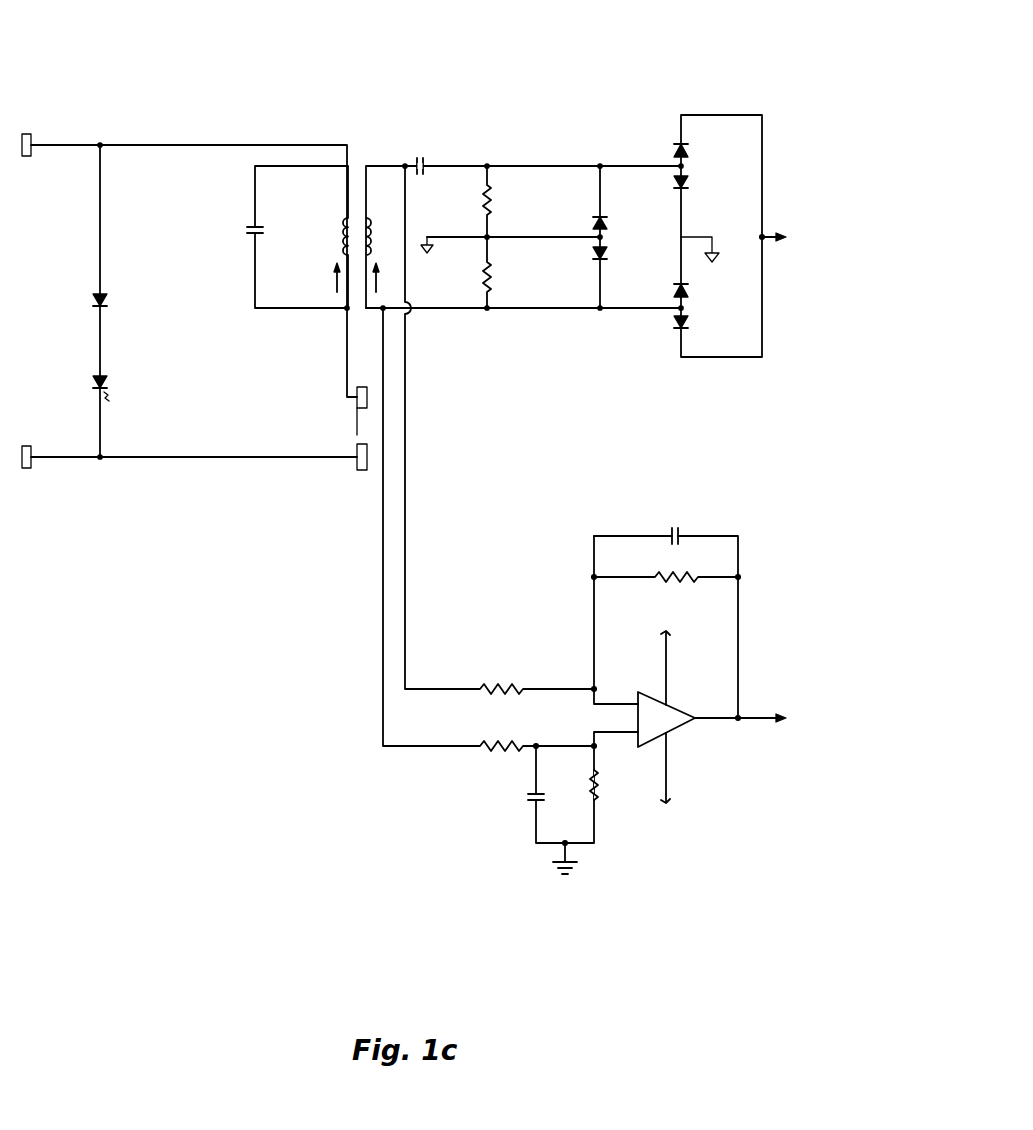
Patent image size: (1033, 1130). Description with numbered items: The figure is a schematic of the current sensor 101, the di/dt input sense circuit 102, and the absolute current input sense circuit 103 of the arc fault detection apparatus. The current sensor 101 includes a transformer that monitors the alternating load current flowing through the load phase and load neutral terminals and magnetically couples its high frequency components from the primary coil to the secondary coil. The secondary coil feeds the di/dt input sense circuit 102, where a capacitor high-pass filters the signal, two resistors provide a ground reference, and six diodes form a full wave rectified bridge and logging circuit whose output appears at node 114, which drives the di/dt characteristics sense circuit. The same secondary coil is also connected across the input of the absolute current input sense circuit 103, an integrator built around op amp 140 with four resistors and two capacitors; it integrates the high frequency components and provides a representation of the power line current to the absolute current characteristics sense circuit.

The current sensor 101 is at (333, 130).
The di/dt input sense circuit 102 is at (554, 360).
The absolute current input sense circuit 103 is at (477, 868).
The node 114 is at (760, 237).
The op amp 140 is at (652, 693).